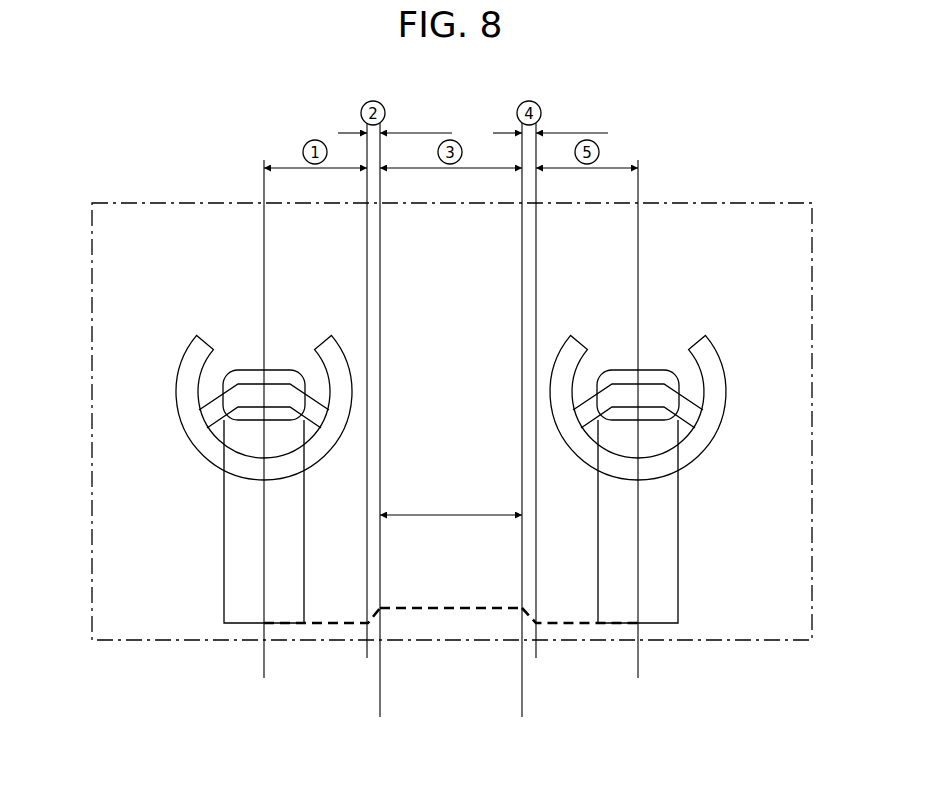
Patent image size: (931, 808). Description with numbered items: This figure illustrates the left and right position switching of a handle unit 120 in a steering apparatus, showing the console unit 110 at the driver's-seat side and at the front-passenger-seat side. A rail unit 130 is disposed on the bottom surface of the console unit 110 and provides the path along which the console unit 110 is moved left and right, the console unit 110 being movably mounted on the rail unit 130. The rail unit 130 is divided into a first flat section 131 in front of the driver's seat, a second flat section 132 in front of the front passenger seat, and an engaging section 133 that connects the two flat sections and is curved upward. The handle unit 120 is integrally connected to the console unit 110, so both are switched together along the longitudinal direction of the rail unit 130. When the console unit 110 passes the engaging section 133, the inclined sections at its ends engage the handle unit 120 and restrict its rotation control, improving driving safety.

The console unit 110 is at (244, 535).
The handle unit 120 is at (176, 352).
The rail unit 130 is at (550, 629).
The first flat section 131 is at (264, 673).
The second flat section 132 is at (638, 673).
The engaging section 133 is at (522, 673).